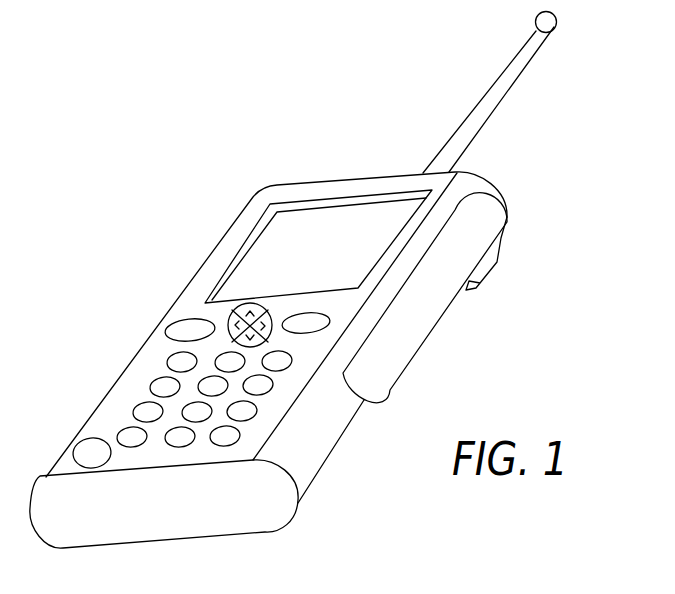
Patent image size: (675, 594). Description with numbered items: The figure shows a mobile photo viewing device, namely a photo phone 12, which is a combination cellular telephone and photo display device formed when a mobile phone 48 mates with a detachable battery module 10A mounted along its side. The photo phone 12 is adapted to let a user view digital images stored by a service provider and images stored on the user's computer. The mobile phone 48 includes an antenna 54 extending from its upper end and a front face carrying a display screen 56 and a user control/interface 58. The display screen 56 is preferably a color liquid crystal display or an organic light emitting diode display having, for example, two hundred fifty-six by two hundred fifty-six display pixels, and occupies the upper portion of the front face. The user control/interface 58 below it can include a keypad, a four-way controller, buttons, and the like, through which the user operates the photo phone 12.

The photo phone 12 is at (542, 178).
The mobile phone 48 is at (226, 235).
The display screen 56 is at (327, 220).
The antenna 54 is at (474, 106).
The battery module 10A is at (437, 323).
The user control/interface 58 is at (155, 334).